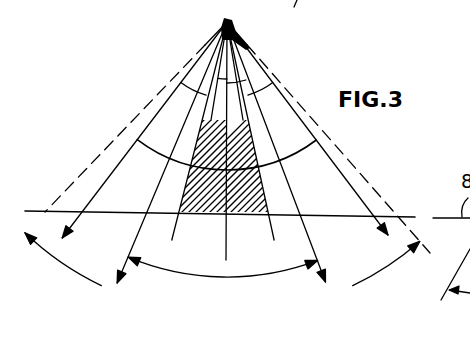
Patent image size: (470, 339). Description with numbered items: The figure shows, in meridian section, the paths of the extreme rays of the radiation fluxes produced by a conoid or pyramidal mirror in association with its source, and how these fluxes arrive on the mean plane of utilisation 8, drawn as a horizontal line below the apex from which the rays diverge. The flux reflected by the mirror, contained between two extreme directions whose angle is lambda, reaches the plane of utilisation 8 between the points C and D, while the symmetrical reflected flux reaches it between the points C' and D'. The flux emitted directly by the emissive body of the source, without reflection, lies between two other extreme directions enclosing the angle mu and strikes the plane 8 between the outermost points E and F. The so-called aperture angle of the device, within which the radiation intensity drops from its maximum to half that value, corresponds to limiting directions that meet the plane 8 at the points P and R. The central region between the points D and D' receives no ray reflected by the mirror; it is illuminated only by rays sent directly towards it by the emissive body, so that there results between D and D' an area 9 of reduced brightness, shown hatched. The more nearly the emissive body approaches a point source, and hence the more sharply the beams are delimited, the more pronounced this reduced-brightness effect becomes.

The mean plane of utilisation 8 is at (24, 208).
The area of reduced brightness 9 is at (203, 190).
The point E is at (129, 117).
The point F is at (328, 137).
The point P is at (172, 152).
The point R is at (276, 152).
The point C is at (144, 134).
The point C' is at (307, 133).
The point D is at (199, 132).
The point D' is at (250, 133).